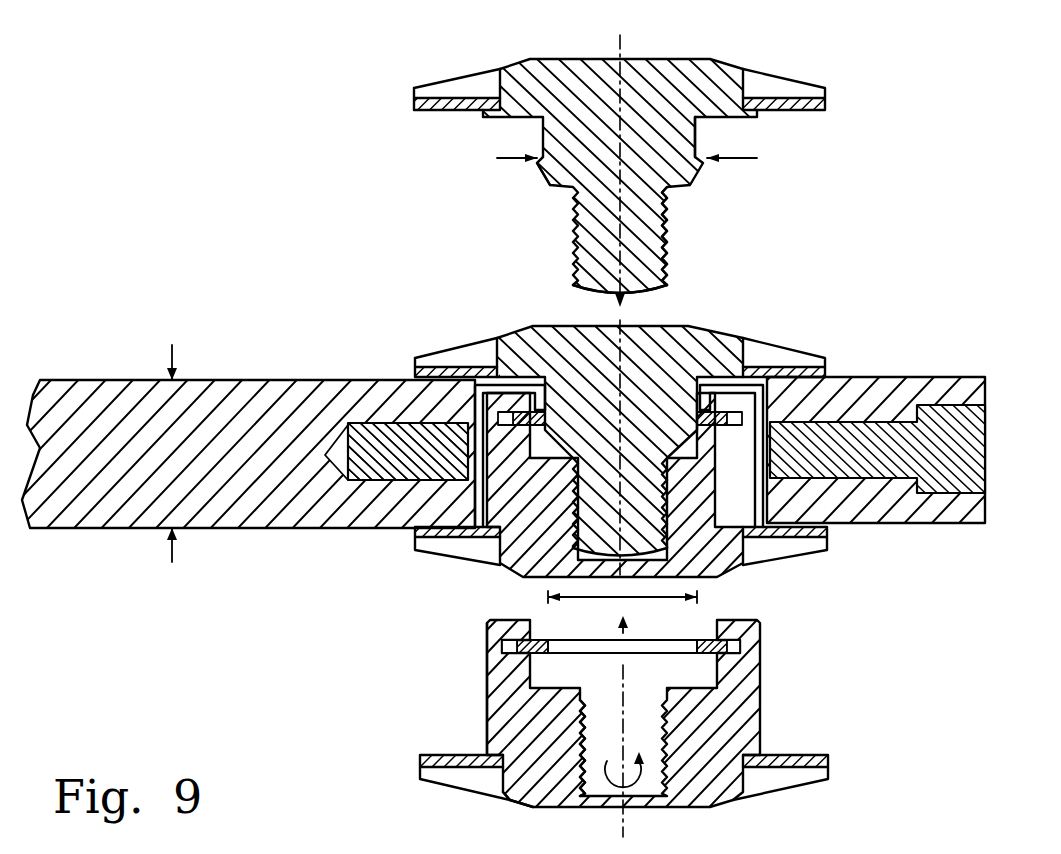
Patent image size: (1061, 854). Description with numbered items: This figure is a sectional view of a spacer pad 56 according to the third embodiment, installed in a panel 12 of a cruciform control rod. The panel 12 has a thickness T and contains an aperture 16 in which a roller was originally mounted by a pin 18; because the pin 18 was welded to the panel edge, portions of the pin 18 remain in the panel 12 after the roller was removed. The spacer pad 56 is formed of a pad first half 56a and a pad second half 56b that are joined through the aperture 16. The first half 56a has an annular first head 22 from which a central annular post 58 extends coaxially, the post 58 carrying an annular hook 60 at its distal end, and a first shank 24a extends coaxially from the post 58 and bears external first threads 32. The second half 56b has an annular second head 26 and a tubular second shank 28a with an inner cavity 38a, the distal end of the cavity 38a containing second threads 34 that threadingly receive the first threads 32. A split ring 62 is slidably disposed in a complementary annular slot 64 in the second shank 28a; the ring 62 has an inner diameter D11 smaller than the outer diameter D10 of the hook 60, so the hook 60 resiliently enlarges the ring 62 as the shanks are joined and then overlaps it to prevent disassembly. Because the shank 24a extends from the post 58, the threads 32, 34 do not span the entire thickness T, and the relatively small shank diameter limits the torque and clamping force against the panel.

The panel 12 is at (87, 529).
The aperture 16 is at (792, 528).
The pin 18 is at (986, 449).
The first head 22 is at (687, 58).
The first shank 24a is at (667, 225).
The second head 26 is at (520, 807).
The second shank 28a is at (760, 686).
The first threads 32 is at (667, 258).
The second threads 34 is at (580, 721).
The inner cavity 38a is at (653, 731).
The spacer pad 56 is at (790, 330).
The pad first half 56a is at (555, 55).
The pad second half 56b is at (512, 568).
The central annular post 58 is at (697, 138).
The annular hook 60 is at (543, 167).
The split ring 62 is at (707, 655).
The annular slot 64 is at (487, 682).
The thickness of the panel T is at (173, 364).
The outer diameter of the post hook D10 is at (740, 162).
The inner diameter of the ring D11 is at (633, 598).